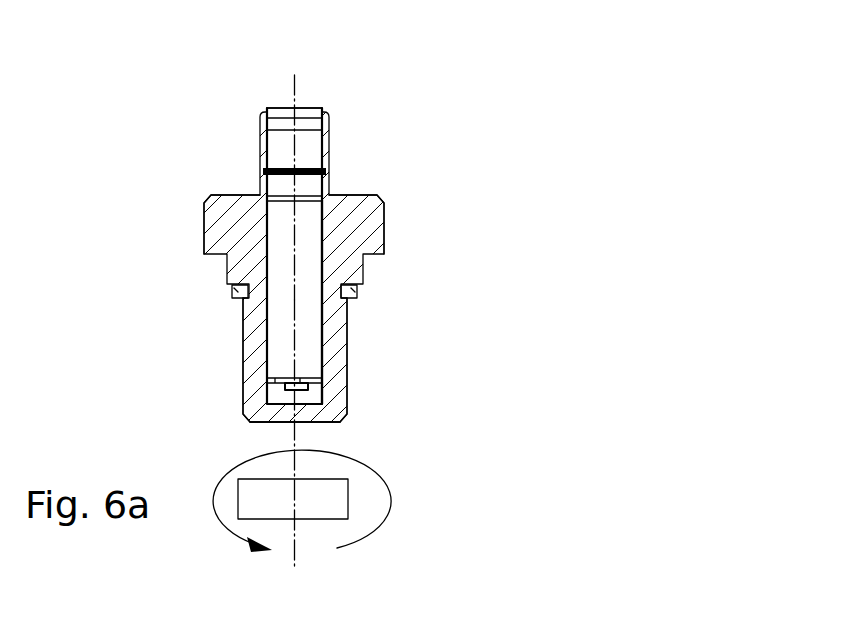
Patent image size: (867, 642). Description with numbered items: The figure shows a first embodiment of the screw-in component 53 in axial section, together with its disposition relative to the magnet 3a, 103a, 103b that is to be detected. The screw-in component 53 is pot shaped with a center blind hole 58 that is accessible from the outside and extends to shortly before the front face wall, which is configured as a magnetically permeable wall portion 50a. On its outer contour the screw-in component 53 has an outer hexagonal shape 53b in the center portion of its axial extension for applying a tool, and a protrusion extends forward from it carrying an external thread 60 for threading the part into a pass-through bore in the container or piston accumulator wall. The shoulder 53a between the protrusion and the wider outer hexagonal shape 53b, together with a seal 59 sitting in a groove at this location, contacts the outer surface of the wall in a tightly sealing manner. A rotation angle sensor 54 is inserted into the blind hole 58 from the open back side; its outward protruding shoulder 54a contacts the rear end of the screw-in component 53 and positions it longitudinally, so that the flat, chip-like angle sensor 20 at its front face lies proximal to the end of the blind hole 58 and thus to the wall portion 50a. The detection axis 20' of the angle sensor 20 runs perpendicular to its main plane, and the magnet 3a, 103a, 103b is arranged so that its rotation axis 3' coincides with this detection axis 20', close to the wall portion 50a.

The screw-in component 53 is at (380, 152).
The shoulder 53a is at (227, 292).
The outer hexagonal shape 53b is at (390, 196).
The rotation angle sensor 54 is at (308, 340).
The outward protruding shoulder 54a is at (323, 108).
The blind hole 58 is at (325, 327).
The seal 59 is at (358, 290).
The external thread 60 is at (243, 353).
The magnetically permeable wall portion 50a is at (257, 417).
The angle sensor 20 is at (379, 437).
The detection axis 20' is at (255, 183).
The rotation axis 3' is at (263, 462).
The magnet 3a is at (459, 540).
The magnet 103a is at (293, 499).
The magnet 103b is at (335, 522).